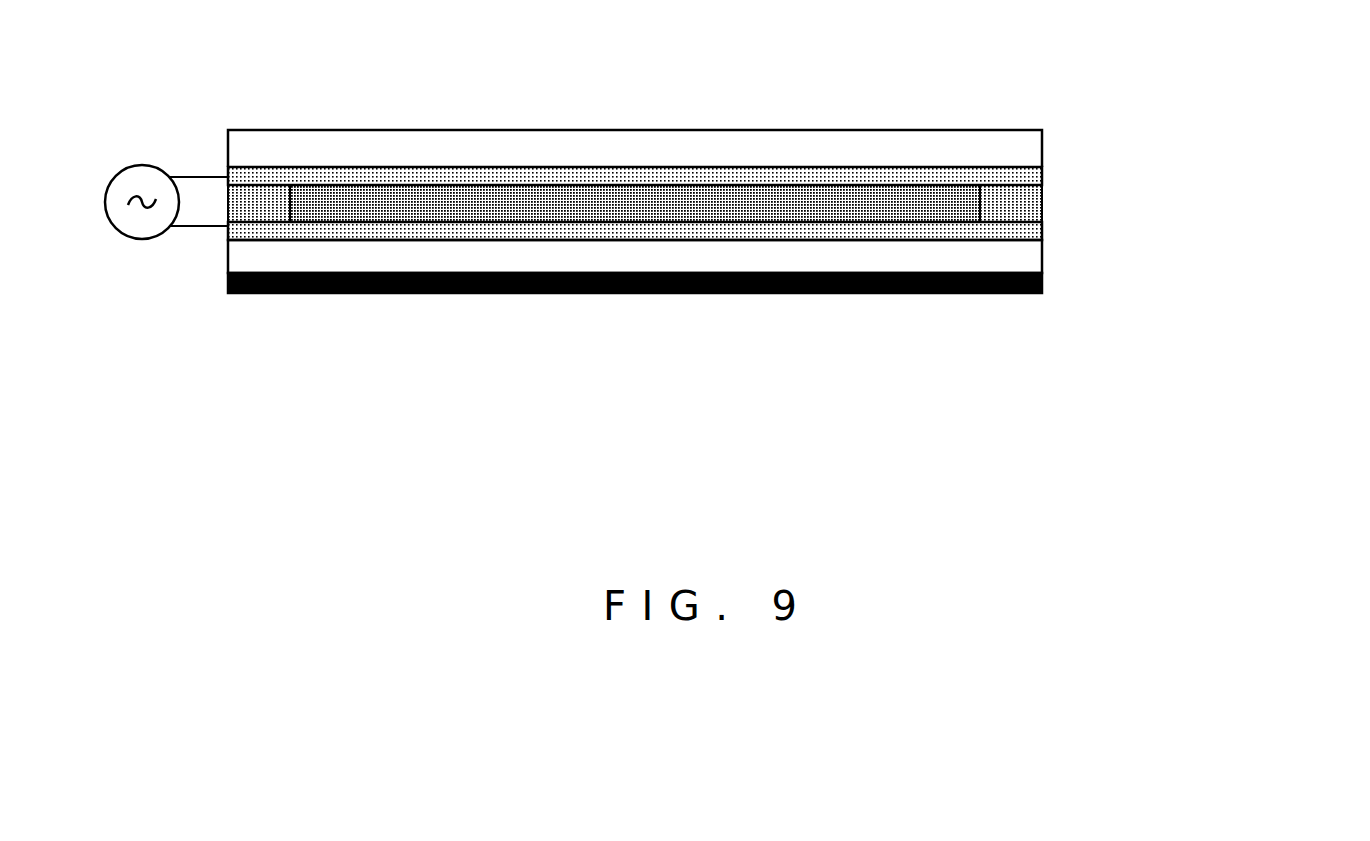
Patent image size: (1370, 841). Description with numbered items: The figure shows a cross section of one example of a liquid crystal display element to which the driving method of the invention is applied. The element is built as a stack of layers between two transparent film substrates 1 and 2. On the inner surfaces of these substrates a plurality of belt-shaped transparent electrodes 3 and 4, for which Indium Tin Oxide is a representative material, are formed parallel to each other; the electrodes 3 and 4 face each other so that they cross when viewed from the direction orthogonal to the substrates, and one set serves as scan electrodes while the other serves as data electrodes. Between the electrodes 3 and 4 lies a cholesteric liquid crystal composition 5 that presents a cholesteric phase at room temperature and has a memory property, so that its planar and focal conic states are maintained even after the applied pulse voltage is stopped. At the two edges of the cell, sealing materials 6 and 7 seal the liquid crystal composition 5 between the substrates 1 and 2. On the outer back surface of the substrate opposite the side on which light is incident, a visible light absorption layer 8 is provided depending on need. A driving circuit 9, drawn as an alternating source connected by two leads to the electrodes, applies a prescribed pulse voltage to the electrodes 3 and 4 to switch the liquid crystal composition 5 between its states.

The substrate 1 is at (925, 142).
The substrate 2 is at (513, 253).
The electrode 3 is at (1048, 178).
The electrode 4 is at (1048, 228).
The liquid crystal composition 5 is at (636, 192).
The sealing material 6 is at (208, 211).
The sealing material 7 is at (1048, 202).
The visible light absorption layer 8 is at (828, 300).
The driving circuit 9 is at (96, 230).